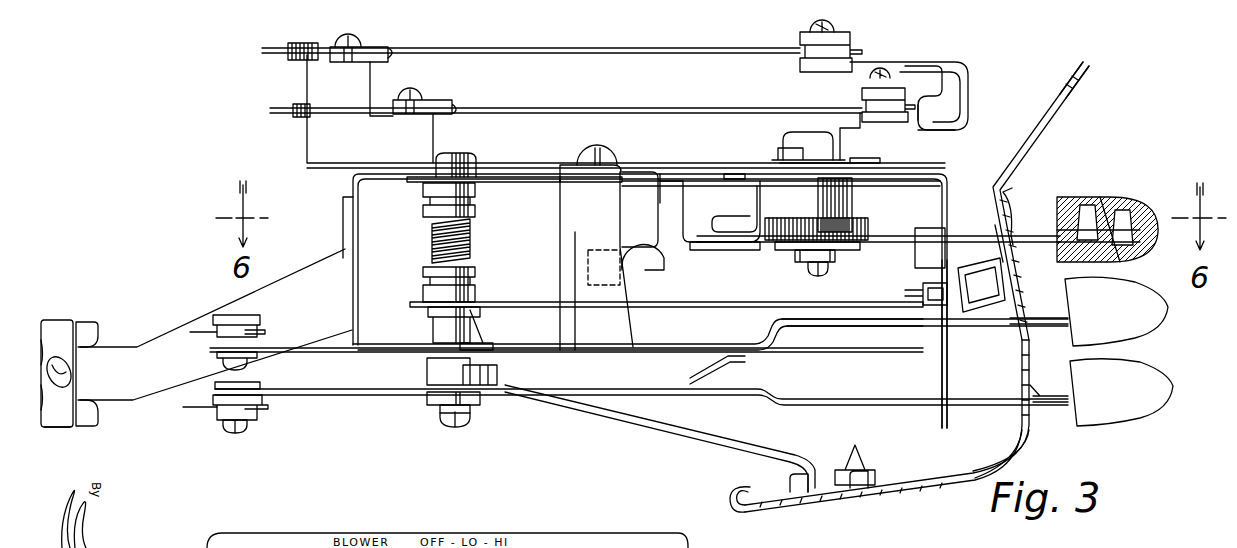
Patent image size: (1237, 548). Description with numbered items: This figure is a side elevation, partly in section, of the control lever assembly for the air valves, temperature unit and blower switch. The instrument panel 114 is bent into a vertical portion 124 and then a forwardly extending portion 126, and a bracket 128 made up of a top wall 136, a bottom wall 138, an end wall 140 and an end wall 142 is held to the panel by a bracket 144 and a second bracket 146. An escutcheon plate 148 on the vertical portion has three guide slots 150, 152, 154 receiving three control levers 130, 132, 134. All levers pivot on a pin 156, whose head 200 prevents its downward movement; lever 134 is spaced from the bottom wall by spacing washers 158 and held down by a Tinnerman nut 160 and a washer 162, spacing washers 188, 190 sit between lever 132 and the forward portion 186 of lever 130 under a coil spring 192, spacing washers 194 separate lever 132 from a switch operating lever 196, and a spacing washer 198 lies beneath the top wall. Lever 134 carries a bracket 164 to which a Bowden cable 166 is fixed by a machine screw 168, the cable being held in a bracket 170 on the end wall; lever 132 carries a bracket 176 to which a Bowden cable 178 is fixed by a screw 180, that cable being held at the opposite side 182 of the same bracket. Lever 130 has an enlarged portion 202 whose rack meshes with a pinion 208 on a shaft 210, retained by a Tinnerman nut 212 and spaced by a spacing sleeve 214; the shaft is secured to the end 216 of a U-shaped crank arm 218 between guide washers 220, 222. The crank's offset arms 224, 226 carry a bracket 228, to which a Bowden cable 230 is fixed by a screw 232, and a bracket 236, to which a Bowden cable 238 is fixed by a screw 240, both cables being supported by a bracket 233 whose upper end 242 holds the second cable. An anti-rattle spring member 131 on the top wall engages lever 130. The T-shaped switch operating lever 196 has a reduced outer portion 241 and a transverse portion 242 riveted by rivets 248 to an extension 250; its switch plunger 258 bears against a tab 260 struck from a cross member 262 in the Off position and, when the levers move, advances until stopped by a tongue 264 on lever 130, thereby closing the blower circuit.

The instrument panel 114 is at (1100, 68).
The vertical portion of instrument panel 124 is at (1016, 386).
The forwardly extending portion of instrument panel 126 is at (940, 482).
The bracket 128 is at (397, 191).
The control lever 130 is at (1138, 210).
The anti-rattle spring member 131 is at (752, 194).
The control lever 132 is at (510, 348).
The control lever 134 is at (1152, 408).
The top wall 136 is at (660, 178).
The bottom wall 138 is at (805, 350).
The end wall 140 is at (352, 220).
The end wall 142 is at (950, 198).
The bracket 144 is at (968, 270).
The second bracket 146 is at (752, 446).
The escutcheon plate 148 is at (1028, 440).
The guide slot 150 is at (1012, 228).
The guide slot 152 is at (1030, 318).
The guide slot 154 is at (1036, 392).
The pin 156 is at (470, 412).
The spacing washers 158 is at (428, 368).
The Tinnerman nut 160 is at (448, 420).
The washer 162 is at (428, 400).
The bracket 164 is at (228, 430).
The Bowden cable 166 is at (195, 409).
The machine screw 168 is at (262, 436).
The bracket 170 is at (72, 424).
The bracket 176 is at (262, 318).
The Bowden cable 178 is at (208, 342).
The screw 180 is at (243, 363).
The opposite side of bracket 182 is at (58, 328).
The forward portion of lever 186 is at (520, 175).
The spacing washer 188 is at (478, 192).
The spacing washer 190 is at (432, 290).
The coil spring 192 is at (475, 238).
The spacing washers 194 is at (430, 333).
The switch operating lever 196 is at (1013, 212).
The spacing washer 198 is at (476, 175).
The head of pin 200 is at (440, 170).
The enlarged portion 202 is at (737, 246).
The pinion 208 is at (858, 226).
The shaft 210 is at (818, 272).
The Tinnerman nut 212 is at (800, 262).
The spacing sleeve 214 is at (850, 200).
The end of crank arm 216 is at (780, 160).
The crank arm 218 is at (970, 105).
The guide washer 220 is at (813, 156).
The guide washer 222 is at (860, 164).
The offset arm 224 is at (932, 130).
The offset arm 226 is at (890, 62).
The bracket 228 is at (862, 99).
The Bowden cable 230 is at (630, 110).
The screw 232 is at (895, 85).
The bracket 233 is at (452, 97).
The bracket 236 is at (855, 45).
The Bowden cable 238 is at (600, 46).
The screw 240 is at (808, 25).
The reduced outer portion 241 is at (995, 236).
The transverse portion 242 is at (382, 72).
The rivets 248 is at (895, 284).
The extension 250 is at (772, 302).
The plunger 258 is at (636, 260).
The tab 260 is at (575, 276).
The cross member 262 is at (572, 165).
The tongue 264 is at (640, 225).